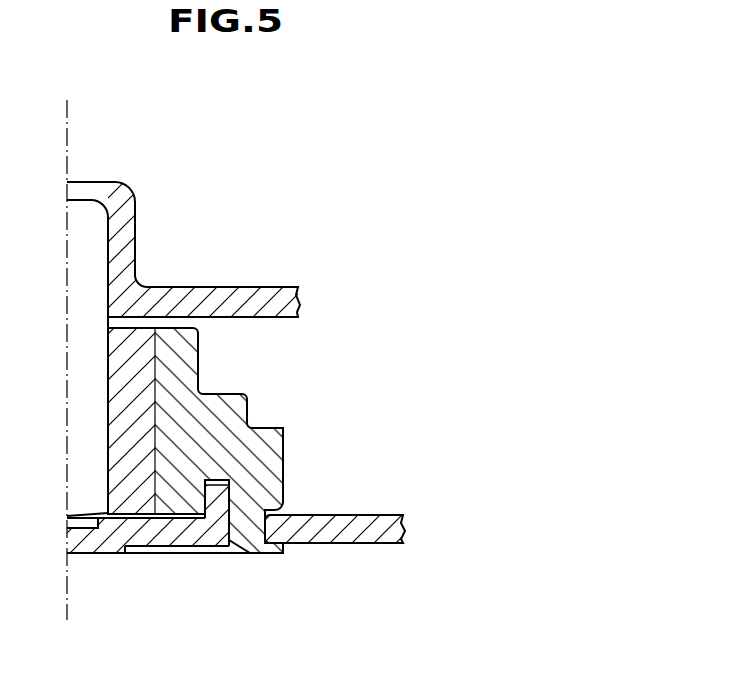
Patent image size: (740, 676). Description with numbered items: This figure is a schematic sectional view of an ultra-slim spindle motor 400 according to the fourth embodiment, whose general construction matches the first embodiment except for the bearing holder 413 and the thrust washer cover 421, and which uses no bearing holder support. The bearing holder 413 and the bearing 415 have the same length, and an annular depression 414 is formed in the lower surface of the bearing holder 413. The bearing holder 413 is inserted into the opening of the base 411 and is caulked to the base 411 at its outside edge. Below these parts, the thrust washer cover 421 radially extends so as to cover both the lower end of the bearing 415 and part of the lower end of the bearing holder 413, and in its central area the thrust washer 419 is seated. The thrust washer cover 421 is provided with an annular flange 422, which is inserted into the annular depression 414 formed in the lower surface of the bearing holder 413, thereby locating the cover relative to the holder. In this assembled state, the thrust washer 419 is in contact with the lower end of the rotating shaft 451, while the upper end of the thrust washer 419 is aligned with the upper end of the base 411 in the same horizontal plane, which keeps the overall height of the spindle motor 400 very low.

The spindle motor 400 is at (358, 183).
The rotating shaft 451 is at (87, 215).
The bearing 415 is at (133, 362).
The bearing holder 413 is at (250, 445).
The annular depression 414 is at (216, 495).
The annular flange 422 is at (223, 507).
The thrust washer cover 421 is at (162, 535).
The thrust washer 419 is at (85, 527).
The base 411 is at (343, 537).